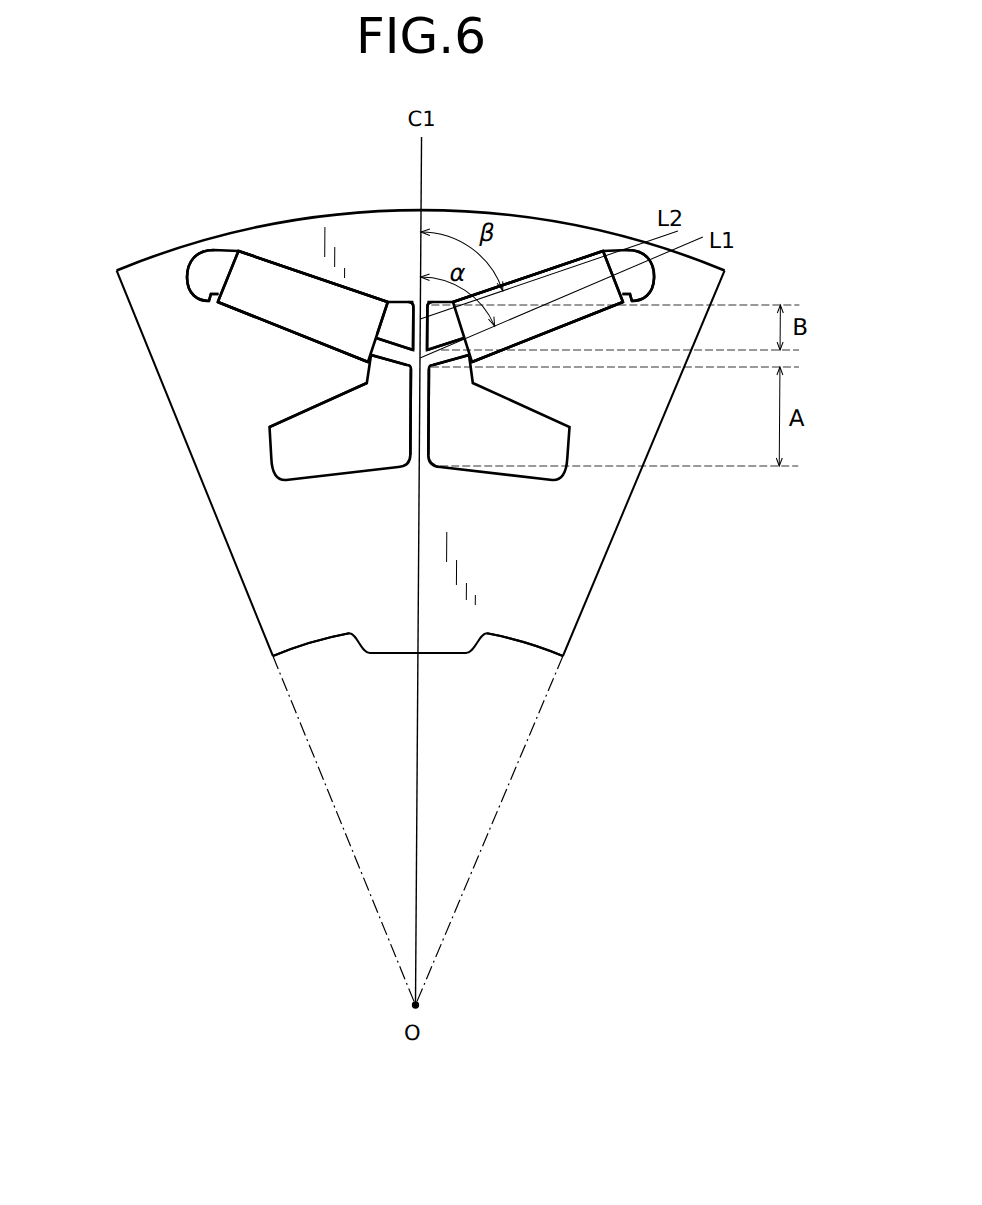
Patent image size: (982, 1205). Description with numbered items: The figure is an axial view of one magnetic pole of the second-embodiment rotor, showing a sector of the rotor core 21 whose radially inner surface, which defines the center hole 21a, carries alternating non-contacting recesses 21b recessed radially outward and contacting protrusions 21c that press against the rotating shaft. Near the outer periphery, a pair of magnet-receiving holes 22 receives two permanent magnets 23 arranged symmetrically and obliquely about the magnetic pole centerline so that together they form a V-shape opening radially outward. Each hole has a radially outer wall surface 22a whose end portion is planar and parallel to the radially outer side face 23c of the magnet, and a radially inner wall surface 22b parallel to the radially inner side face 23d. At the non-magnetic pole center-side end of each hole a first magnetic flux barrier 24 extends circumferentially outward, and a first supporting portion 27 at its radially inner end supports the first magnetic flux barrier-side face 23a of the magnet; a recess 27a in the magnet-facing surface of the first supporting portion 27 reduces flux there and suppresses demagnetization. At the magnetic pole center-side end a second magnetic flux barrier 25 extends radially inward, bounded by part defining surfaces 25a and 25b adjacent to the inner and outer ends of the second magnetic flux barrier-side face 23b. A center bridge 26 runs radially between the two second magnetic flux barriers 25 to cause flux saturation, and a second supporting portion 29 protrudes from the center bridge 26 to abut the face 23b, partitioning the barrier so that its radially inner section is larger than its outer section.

The rotor core 21 is at (266, 578).
The center hole 21a is at (621, 701).
The non-contacting recess 21b is at (507, 640).
The contacting protrusion 21c is at (442, 655).
The magnet-receiving hole 22 is at (306, 345).
The radially outer wall surface 22a is at (303, 276).
The radially inner wall surface 22b is at (310, 338).
The permanent magnet 23 is at (264, 310).
The first magnetic flux barrier-side face 23a is at (227, 273).
The second magnetic flux barrier-side face 23b is at (398, 300).
The radially outer side face 23c is at (279, 265).
The radially inner side face 23d is at (286, 328).
The first magnetic flux barrier 24 is at (190, 268).
The second magnetic flux barrier 25 is at (340, 478).
The second magnetic flux barrier part defining surface 25a is at (336, 432).
The second magnetic flux barrier part defining surface 25b is at (372, 300).
The center bridge 26 is at (388, 473).
The first supporting portion 27 is at (191, 292).
The recess 27a is at (222, 312).
The second supporting portion 29 is at (390, 358).